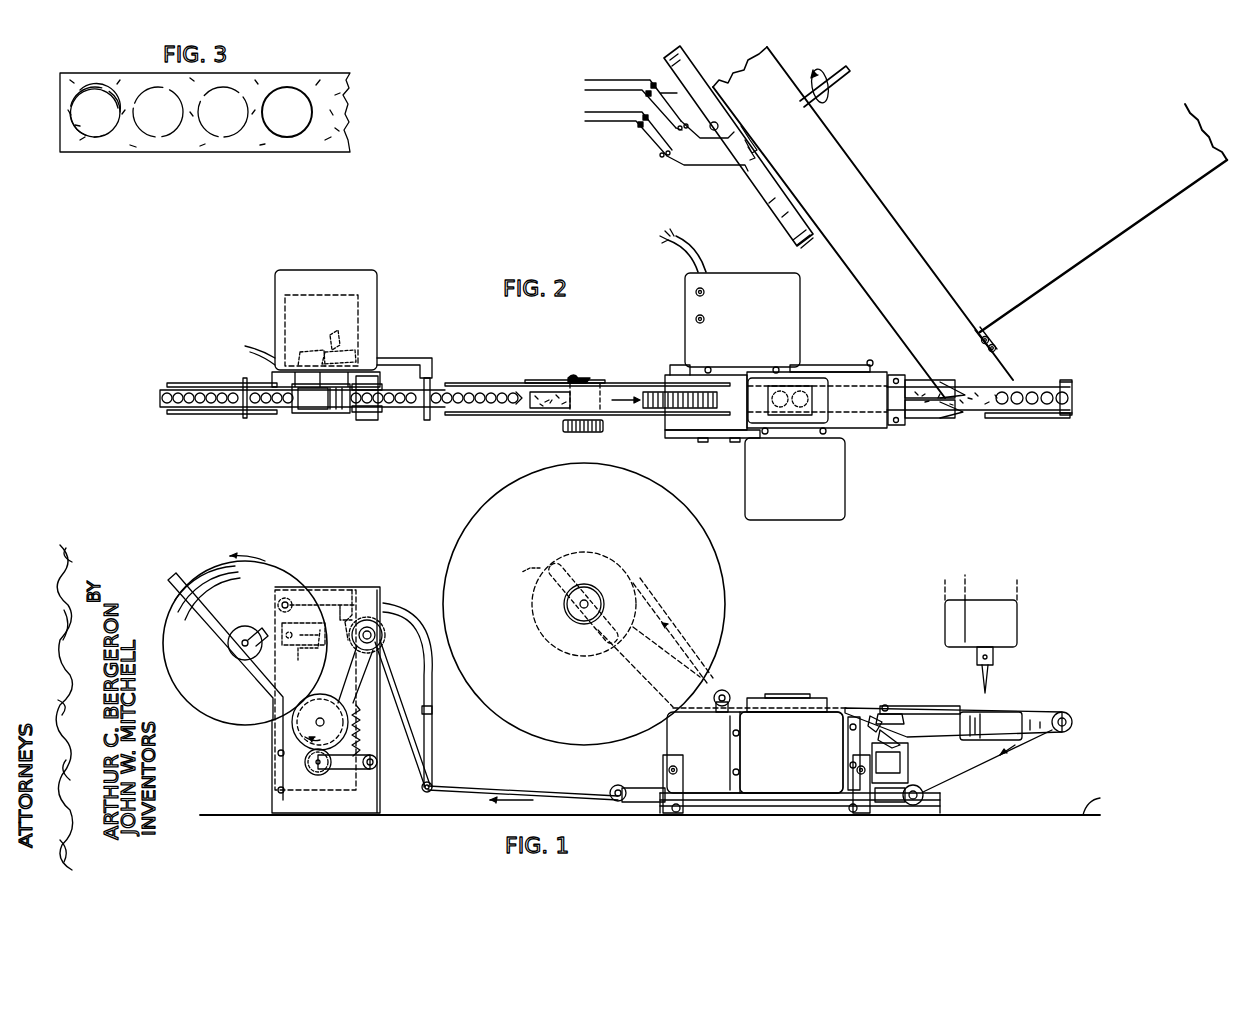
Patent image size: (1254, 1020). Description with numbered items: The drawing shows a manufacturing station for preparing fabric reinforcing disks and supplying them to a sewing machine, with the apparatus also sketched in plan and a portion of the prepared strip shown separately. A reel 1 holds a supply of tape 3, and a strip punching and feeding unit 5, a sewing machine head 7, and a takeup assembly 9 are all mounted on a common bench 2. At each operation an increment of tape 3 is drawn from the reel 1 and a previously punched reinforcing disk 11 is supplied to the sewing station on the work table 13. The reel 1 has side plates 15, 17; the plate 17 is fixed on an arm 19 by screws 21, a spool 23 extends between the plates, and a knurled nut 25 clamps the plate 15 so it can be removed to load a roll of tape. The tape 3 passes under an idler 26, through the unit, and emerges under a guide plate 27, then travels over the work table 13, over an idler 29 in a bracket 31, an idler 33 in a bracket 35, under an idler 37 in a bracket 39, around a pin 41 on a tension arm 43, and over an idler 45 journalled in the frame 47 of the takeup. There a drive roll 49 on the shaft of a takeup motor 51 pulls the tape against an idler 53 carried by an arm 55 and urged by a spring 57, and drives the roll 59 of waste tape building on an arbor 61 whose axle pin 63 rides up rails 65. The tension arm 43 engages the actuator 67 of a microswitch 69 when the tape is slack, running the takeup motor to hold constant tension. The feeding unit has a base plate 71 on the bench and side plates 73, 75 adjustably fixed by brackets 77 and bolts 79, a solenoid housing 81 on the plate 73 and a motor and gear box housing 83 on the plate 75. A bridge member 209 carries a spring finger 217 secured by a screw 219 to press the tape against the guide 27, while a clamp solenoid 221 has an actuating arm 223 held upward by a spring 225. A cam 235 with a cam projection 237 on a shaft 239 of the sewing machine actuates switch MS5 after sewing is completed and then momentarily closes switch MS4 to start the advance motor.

In FIG. 2, the reel 1 is at (500, 372).
In FIG. 1, the reel 1 is at (488, 502).
In FIG. 2, the bench 2 is at (1168, 238).
In FIG. 1, the bench 2 is at (1184, 811).
In FIG. 3, the tape 3 is at (112, 152).
In FIG. 2, the tape 3 is at (548, 404).
In FIG. 1, the tape 3 is at (583, 553).
In FIG. 2, the strip punching and feeding unit 5 is at (728, 443).
In FIG. 1, the strip punching and feeding unit 5 is at (788, 688).
In FIG. 2, the sewing machine head 7 is at (1003, 338).
In FIG. 1, the sewing machine head 7 is at (1010, 690).
In FIG. 2, the takeup assembly 9 is at (262, 315).
In FIG. 1, the takeup assembly 9 is at (386, 578).
In FIG. 3, the reinforcing disk 11 is at (222, 124).
In FIG. 2, the reinforcing disk 11 is at (986, 392).
In FIG. 2, the work table 13 is at (975, 418).
In FIG. 1, the work table 13 is at (1004, 736).
In FIG. 2, the side plate 15 is at (478, 416).
In FIG. 1, the side plate 15 is at (477, 520).
In FIG. 2, the side plate 17 is at (478, 382).
In FIG. 2, the arm 19 is at (546, 380).
In FIG. 1, the arm 19 is at (520, 572).
In FIG. 2, the screws 21 is at (572, 378).
In FIG. 2, the spool 23 is at (603, 388).
In FIG. 2, the knurled nut 25 is at (578, 432).
In FIG. 1, the knurled nut 25 is at (566, 620).
In FIG. 1, the idler 26 is at (736, 695).
In FIG. 2, the guide plate 27 is at (942, 425).
In FIG. 1, the guide plate 27 is at (952, 708).
In FIG. 2, the idler 29 is at (1073, 393).
In FIG. 1, the idler 29 is at (1086, 720).
In FIG. 2, the bracket 31 is at (1052, 420).
In FIG. 1, the bracket 31 is at (1045, 738).
In FIG. 1, the idler 33 is at (925, 795).
In FIG. 1, the bracket 35 is at (905, 803).
In FIG. 1, the idler 37 is at (610, 792).
In FIG. 1, the bracket 39 is at (630, 804).
In FIG. 2, the pin 41 is at (424, 415).
In FIG. 1, the pin 41 is at (434, 781).
In FIG. 2, the tension arm 43 is at (420, 356).
In FIG. 1, the tension arm 43 is at (432, 752).
In FIG. 2, the idler 45 is at (364, 420).
In FIG. 1, the idler 45 is at (374, 646).
In FIG. 1, the frame 47 is at (384, 602).
In FIG. 2, the drive roll 49 is at (320, 414).
In FIG. 1, the drive roll 49 is at (297, 738).
In FIG. 2, the takeup motor 51 is at (328, 306).
In FIG. 1, the takeup motor 51 is at (350, 793).
In FIG. 1, the idler 53 is at (316, 775).
In FIG. 1, the arm 55 is at (340, 770).
In FIG. 1, the spring 57 is at (378, 762).
In FIG. 2, the roll 59 is at (160, 398).
In FIG. 1, the roll 59 is at (200, 570).
In FIG. 1, the arbor 61 is at (244, 626).
In FIG. 2, the axle pin 63 is at (245, 418).
In FIG. 1, the axle pin 63 is at (232, 630).
In FIG. 2, the rails 65 is at (188, 387).
In FIG. 1, the rails 65 is at (170, 578).
In FIG. 2, the actuator 67 is at (335, 335).
In FIG. 1, the actuator 67 is at (352, 590).
In FIG. 2, the microswitch 69 is at (318, 350).
In FIG. 1, the microswitch 69 is at (312, 648).
In FIG. 1, the base plate 71 is at (735, 803).
In FIG. 2, the side plate 73 is at (712, 436).
In FIG. 1, the side plate 73 is at (672, 735).
In FIG. 2, the side plate 75 is at (838, 372).
In FIG. 2, the brackets 77 is at (666, 420).
In FIG. 1, the brackets 77 is at (663, 778).
In FIG. 1, the bolts 79 is at (683, 769).
In FIG. 2, the solenoid housing 81 is at (804, 498).
In FIG. 1, the solenoid housing 81 is at (808, 776).
In FIG. 2, the motor and gear box housing 83 is at (760, 352).
In FIG. 1, the bridge member 209 is at (887, 704).
In FIG. 2, the spring finger 217 is at (920, 420).
In FIG. 2, the screw 219 is at (905, 428).
In FIG. 1, the clamp solenoid 221 is at (910, 768).
In FIG. 1, the actuating arm 223 is at (902, 740).
In FIG. 1, the spring 225 is at (876, 714).
In FIG. 2, the cam 235 is at (766, 211).
In FIG. 2, the cam projection 237 is at (718, 122).
In FIG. 2, the shaft 239 is at (845, 82).
In FIG. 2, the switch MS4 is at (650, 153).
In FIG. 2, the switch MS5 is at (657, 108).